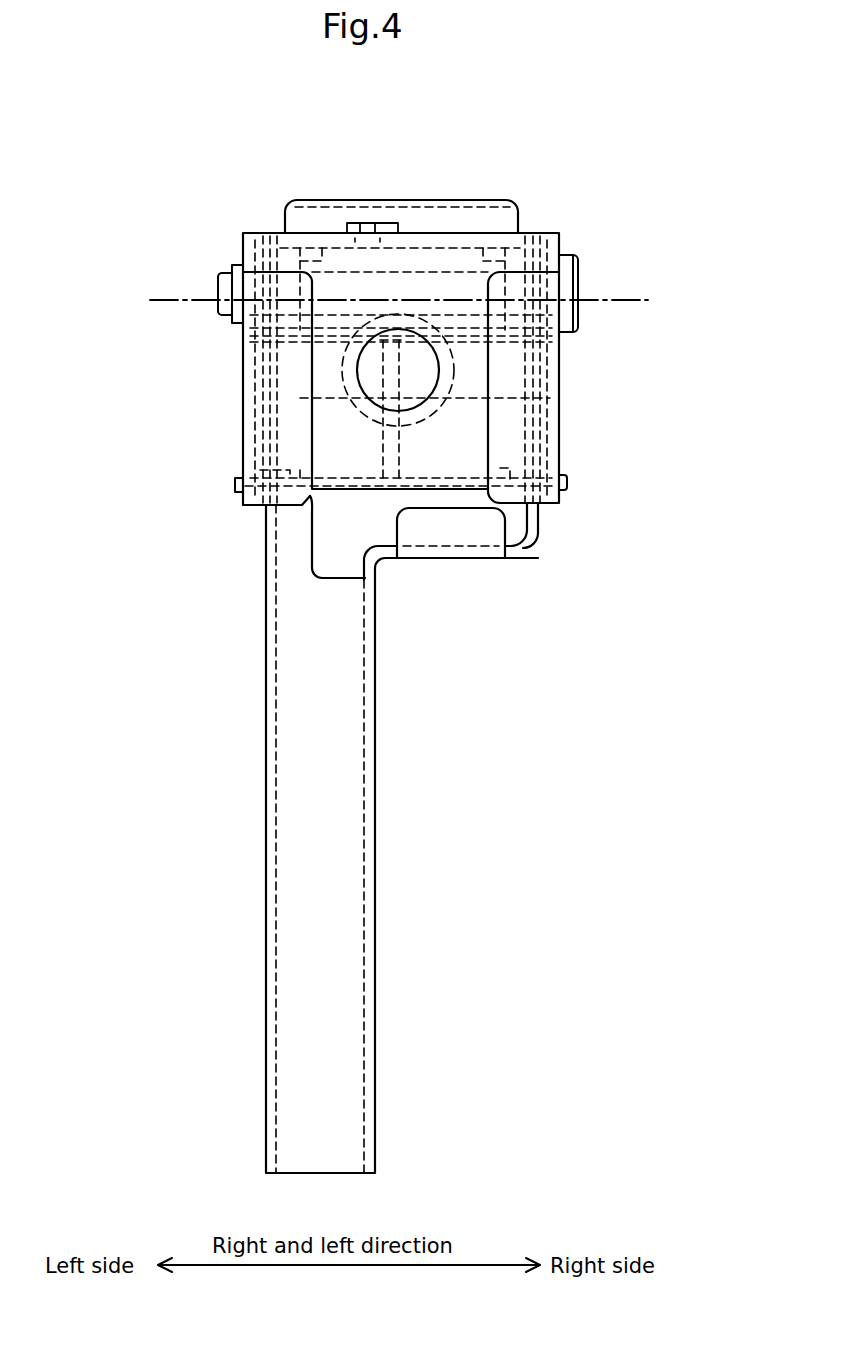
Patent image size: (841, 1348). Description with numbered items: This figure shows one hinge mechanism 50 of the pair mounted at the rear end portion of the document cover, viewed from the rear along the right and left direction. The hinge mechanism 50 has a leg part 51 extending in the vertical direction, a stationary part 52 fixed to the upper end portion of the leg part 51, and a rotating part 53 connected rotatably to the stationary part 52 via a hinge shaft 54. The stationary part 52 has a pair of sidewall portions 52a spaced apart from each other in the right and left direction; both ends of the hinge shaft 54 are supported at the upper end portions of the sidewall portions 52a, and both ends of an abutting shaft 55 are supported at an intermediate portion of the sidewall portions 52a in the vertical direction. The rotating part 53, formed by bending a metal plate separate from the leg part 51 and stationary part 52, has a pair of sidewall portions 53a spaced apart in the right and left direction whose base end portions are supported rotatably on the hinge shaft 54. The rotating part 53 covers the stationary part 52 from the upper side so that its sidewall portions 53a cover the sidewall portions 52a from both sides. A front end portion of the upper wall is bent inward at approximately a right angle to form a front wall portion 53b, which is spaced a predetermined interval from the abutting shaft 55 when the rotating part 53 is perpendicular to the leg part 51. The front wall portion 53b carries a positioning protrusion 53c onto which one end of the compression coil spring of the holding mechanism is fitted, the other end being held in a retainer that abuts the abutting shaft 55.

The hinge mechanism 50 is at (148, 224).
The leg part 51 is at (375, 717).
The stationary part 52 is at (448, 561).
The sidewall portion 52a is at (378, 598).
The rotating part 53 is at (561, 383).
The sidewall portion 53a is at (243, 245).
The front wall portion 53b is at (340, 433).
The positioning protrusion 53c is at (347, 352).
The hinge shaft 54 is at (578, 272).
The abutting shaft 55 is at (500, 403).